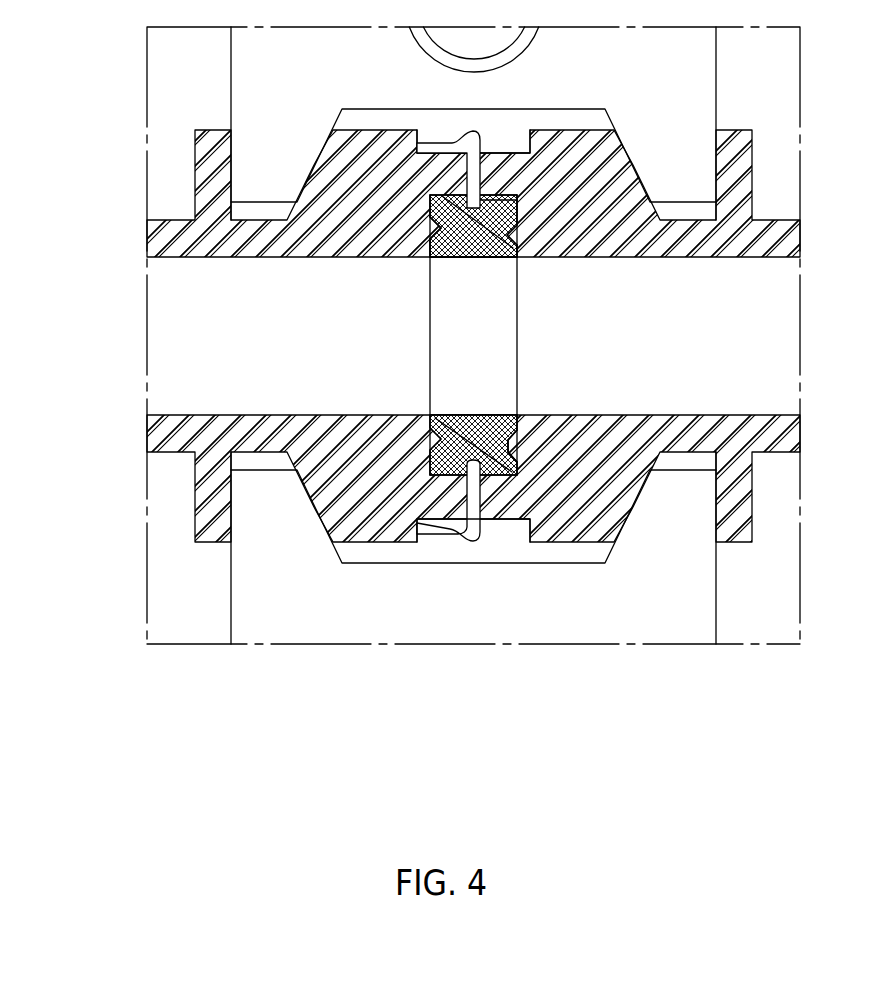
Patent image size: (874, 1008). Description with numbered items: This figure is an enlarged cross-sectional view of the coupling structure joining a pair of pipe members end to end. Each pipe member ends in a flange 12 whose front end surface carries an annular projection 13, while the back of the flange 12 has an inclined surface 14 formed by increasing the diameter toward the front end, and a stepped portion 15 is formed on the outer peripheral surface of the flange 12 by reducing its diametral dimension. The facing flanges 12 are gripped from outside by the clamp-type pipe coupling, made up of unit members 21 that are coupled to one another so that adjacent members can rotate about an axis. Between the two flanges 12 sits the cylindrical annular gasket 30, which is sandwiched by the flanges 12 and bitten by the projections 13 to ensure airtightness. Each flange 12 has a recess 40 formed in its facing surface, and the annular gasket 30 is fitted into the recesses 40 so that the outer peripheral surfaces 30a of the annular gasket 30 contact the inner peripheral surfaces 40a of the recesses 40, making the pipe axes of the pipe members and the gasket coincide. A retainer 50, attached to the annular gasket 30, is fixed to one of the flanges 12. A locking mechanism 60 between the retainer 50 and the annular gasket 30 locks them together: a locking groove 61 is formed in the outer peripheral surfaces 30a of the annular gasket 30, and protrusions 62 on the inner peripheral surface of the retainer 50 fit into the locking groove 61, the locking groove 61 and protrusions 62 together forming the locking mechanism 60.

The unit member 21 is at (231, 79).
The annular gasket 30 is at (430, 212).
The outer peripheral surface 30a is at (463, 192).
The retainer 50 is at (477, 146).
The recess 40 is at (489, 258).
The inner peripheral surface 40a is at (430, 218).
The locking mechanism 60 is at (677, 289).
The locking groove 61 is at (517, 206).
The protrusion 62 is at (517, 245).
The annular projection 13 is at (480, 415).
The flange 12 is at (373, 542).
The inclined surface 14 is at (633, 508).
The stepped portion 15 is at (493, 520).